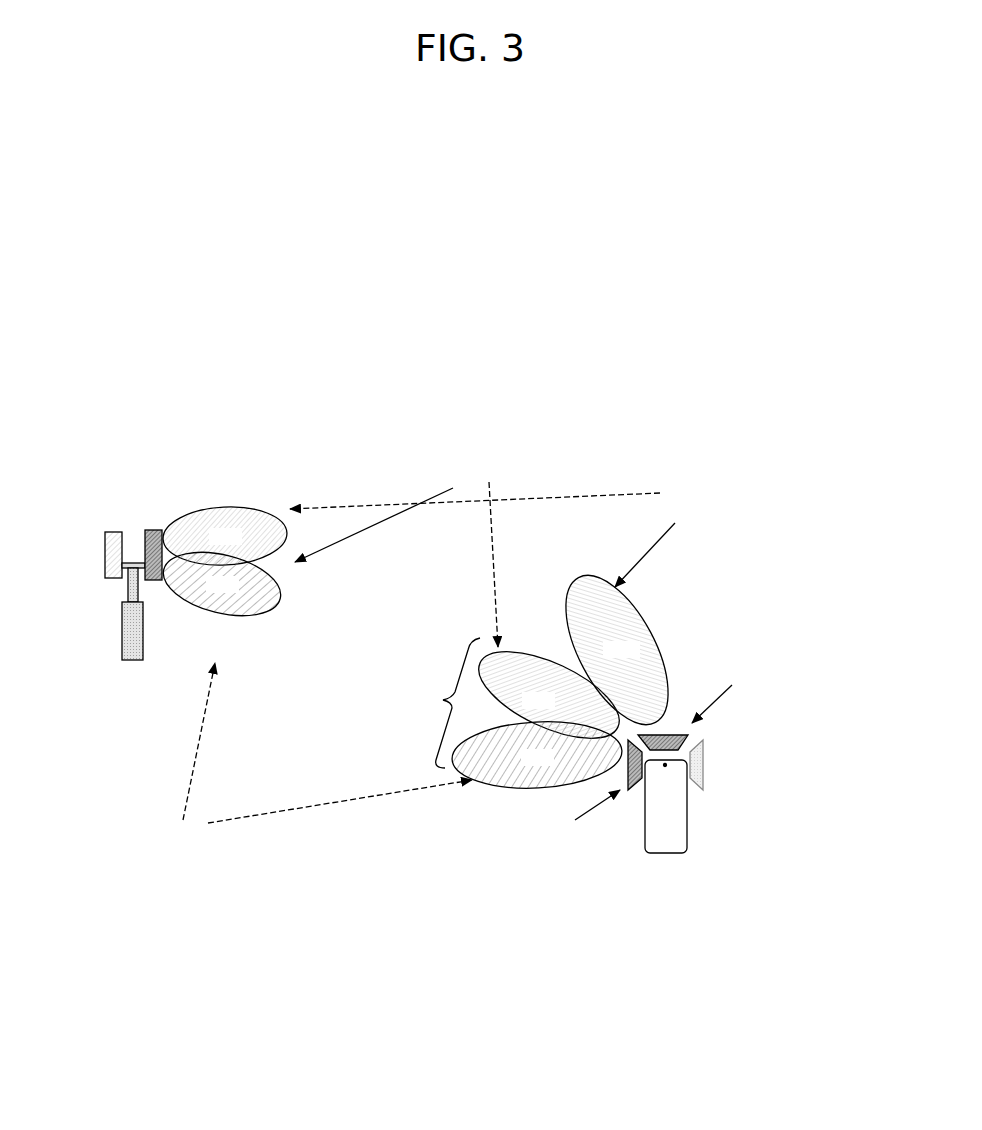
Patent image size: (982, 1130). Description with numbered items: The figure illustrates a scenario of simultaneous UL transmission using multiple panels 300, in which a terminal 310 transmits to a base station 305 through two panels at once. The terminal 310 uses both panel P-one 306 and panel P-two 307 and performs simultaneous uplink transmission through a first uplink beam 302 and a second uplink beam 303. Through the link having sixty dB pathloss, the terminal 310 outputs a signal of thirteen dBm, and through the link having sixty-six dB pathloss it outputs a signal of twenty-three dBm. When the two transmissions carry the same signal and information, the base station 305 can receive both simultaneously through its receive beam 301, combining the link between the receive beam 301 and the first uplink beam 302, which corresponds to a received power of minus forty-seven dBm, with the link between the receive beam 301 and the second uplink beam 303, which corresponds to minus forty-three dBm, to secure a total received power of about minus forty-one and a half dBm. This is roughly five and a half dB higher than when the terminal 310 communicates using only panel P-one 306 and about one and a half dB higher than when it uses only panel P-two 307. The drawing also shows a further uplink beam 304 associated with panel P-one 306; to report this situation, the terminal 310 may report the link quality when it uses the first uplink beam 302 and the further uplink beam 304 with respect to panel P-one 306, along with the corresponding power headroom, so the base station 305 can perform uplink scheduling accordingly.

The simultaneous UL transmission using multiple panels 300 is at (588, 1025).
The beam NB1 301 is at (240, 504).
The beam UB1 302 is at (527, 653).
The beam UB1' 303 is at (588, 572).
The beam UB2 304 is at (497, 790).
The base station 305 is at (103, 592).
The panel P1 306 is at (533, 915).
The panel P2 307 is at (765, 595).
The terminal 310 is at (667, 857).